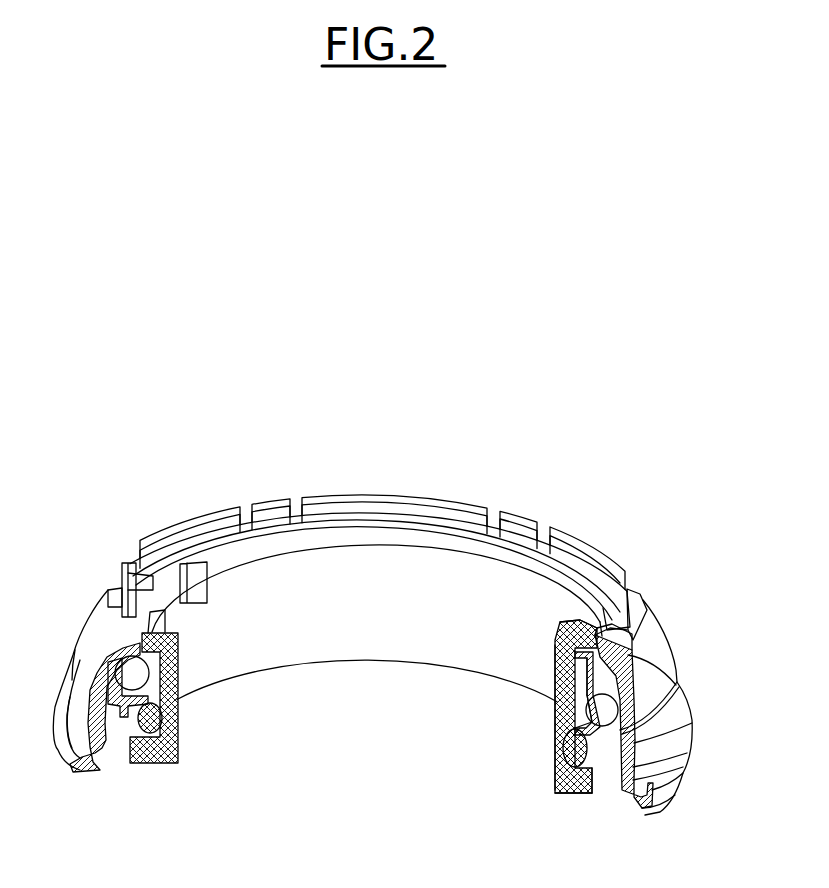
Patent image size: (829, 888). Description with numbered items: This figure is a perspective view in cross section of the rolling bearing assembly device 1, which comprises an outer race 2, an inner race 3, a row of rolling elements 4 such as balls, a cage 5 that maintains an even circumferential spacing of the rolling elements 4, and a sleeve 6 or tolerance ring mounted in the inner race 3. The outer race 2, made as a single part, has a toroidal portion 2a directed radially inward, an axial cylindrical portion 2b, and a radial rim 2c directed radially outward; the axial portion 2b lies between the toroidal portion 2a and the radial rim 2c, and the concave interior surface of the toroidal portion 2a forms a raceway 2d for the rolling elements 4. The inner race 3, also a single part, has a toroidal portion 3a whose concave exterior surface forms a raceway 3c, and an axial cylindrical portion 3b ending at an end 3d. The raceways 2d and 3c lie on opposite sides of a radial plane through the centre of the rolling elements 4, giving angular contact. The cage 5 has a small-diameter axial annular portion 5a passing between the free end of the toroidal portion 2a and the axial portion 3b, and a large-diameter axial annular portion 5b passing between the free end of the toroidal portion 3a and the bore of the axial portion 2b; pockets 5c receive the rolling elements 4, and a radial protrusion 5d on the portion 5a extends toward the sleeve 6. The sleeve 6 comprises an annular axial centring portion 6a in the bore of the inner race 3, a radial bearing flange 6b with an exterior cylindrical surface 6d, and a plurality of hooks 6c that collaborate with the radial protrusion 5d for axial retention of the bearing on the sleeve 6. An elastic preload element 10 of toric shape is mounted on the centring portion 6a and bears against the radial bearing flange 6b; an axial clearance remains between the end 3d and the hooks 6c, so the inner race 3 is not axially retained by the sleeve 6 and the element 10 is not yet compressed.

The rolling bearing assembly device 1 is at (448, 458).
The outer race 2 is at (679, 700).
The toroidal portion 2a is at (636, 718).
The axial portion 2b is at (662, 785).
The radial rim 2c is at (656, 810).
The raceway 2d is at (604, 680).
The inner race 3 is at (566, 730).
The toroidal portion 3a is at (568, 727).
The axial cylindrical portion 3b is at (578, 694).
The raceway 3c is at (586, 708).
The end 3d is at (127, 583).
The rolling elements 4 is at (609, 722).
The cage 5 is at (560, 525).
The axial annular portion of small diameter 5a is at (592, 662).
The axial annular portion of large diameter 5b is at (618, 725).
The pockets 5c is at (645, 742).
The radial protrusion 5d is at (604, 625).
The sleeve 6 is at (553, 786).
The annular axial centring portion 6a is at (560, 670).
The radial bearing flange 6b is at (572, 795).
The hooks 6c is at (576, 632).
The exterior cylindrical surface 6d is at (597, 795).
The elastic preload element 10 is at (600, 765).